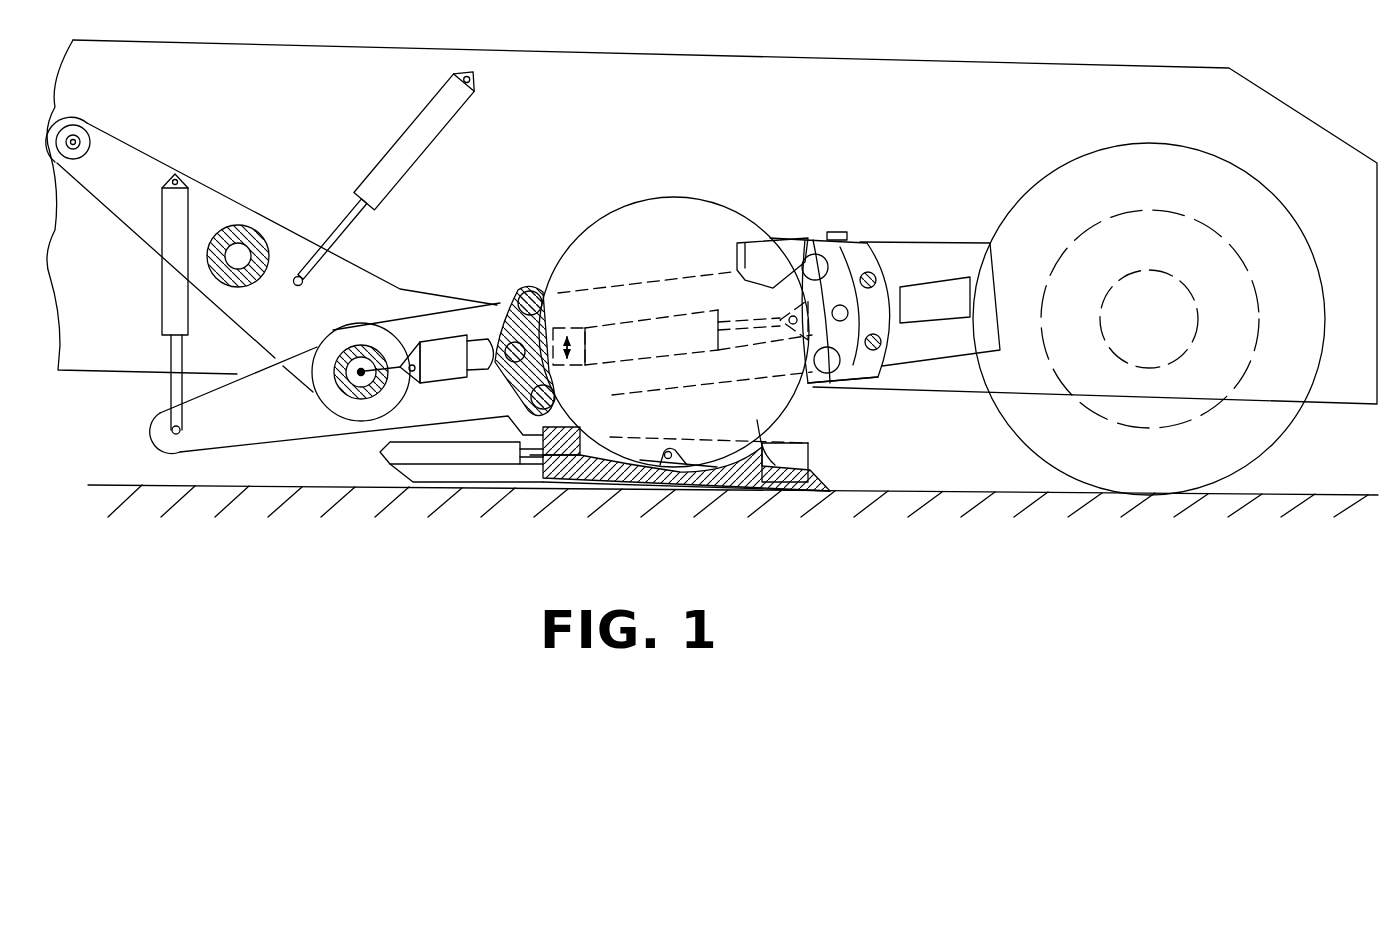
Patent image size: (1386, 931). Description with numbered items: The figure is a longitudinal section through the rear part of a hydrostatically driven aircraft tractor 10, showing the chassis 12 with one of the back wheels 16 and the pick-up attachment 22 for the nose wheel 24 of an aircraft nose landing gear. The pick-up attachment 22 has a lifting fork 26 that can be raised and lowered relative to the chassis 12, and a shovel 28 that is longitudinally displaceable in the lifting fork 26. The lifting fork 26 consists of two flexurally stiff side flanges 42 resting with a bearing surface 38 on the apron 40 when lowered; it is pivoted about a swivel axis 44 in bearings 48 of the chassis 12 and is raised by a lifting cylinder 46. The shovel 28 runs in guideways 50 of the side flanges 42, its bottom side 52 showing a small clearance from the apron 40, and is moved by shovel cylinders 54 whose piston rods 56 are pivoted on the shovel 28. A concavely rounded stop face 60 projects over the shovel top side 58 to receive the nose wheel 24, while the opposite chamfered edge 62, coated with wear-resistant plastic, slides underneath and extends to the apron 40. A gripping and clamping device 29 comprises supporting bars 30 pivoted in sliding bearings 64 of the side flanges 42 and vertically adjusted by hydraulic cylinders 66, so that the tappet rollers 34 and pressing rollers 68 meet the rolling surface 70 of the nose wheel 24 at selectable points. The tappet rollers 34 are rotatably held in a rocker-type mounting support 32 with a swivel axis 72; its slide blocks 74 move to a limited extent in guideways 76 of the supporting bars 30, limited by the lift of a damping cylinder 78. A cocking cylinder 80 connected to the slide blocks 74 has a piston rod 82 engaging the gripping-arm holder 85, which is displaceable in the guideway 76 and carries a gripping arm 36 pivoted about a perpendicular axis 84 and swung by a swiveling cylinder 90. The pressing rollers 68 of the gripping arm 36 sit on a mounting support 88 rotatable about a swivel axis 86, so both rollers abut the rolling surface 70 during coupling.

The aircraft tractor 10 is at (860, 44).
The chassis 12 is at (1034, 70).
The back wheel 16 is at (1036, 438).
The pick-up attachment 22 is at (488, 246).
The nose wheel 24 is at (657, 203).
The lifting fork 26 is at (270, 224).
The shovel 28 is at (693, 480).
The gripping and clamping device 29 is at (827, 222).
The supporting bar 30 is at (933, 264).
The tappet-roller mounting support 32 is at (522, 292).
The tappet roller 34 is at (557, 293).
The gripping arm 36 is at (862, 250).
The bearing surface 38 is at (780, 484).
The apron 40 is at (1268, 500).
The side flange 42 is at (812, 446).
The swivel axis 44 is at (84, 127).
The lifting cylinder 46 is at (432, 115).
The bearing 48 is at (88, 148).
The guideway 50 is at (475, 468).
The bottom side 52 is at (610, 482).
The shovel cylinder 54 is at (392, 452).
The piston rod 56 is at (657, 440).
The shovel top side 58 is at (763, 421).
The stop face 60 is at (645, 453).
The chamfered edge 62 is at (812, 467).
The sliding bearing 64 is at (310, 397).
The hydraulic cylinder 66 is at (168, 300).
The pressing roller 68 is at (815, 253).
The rolling surface 70 is at (755, 228).
The swivel axis 72 is at (505, 302).
The slide block 74 is at (487, 334).
The guideway 76 is at (477, 387).
The damping cylinder 78 is at (428, 345).
The cocking cylinder 80 is at (645, 335).
The piston rod 82 is at (725, 325).
The perpendicular axis 84 is at (838, 233).
The gripping-arm holder 85 is at (757, 262).
The swivel axis 86 is at (848, 313).
The mounting support 88 is at (884, 368).
The swiveling cylinder 90 is at (771, 250).